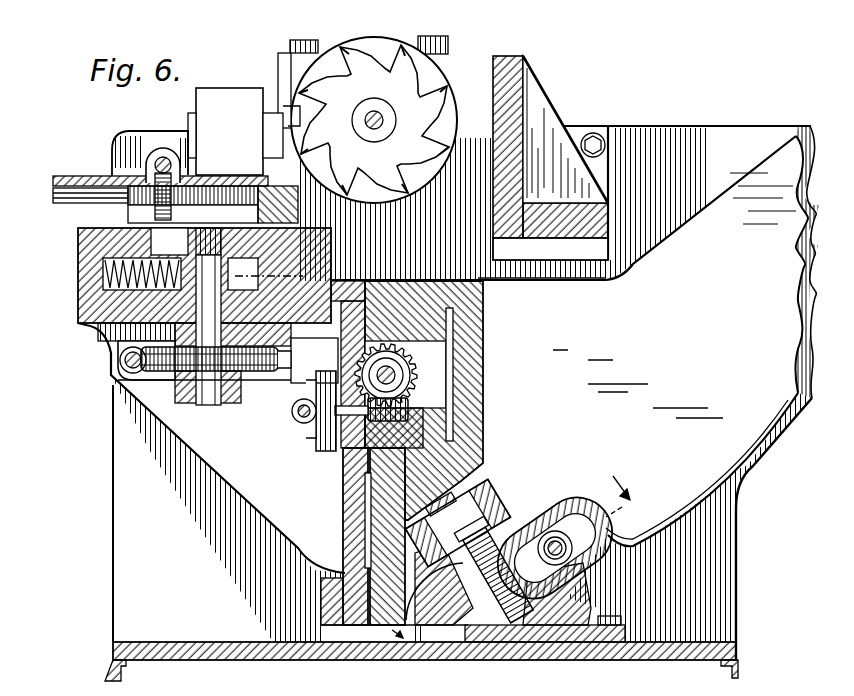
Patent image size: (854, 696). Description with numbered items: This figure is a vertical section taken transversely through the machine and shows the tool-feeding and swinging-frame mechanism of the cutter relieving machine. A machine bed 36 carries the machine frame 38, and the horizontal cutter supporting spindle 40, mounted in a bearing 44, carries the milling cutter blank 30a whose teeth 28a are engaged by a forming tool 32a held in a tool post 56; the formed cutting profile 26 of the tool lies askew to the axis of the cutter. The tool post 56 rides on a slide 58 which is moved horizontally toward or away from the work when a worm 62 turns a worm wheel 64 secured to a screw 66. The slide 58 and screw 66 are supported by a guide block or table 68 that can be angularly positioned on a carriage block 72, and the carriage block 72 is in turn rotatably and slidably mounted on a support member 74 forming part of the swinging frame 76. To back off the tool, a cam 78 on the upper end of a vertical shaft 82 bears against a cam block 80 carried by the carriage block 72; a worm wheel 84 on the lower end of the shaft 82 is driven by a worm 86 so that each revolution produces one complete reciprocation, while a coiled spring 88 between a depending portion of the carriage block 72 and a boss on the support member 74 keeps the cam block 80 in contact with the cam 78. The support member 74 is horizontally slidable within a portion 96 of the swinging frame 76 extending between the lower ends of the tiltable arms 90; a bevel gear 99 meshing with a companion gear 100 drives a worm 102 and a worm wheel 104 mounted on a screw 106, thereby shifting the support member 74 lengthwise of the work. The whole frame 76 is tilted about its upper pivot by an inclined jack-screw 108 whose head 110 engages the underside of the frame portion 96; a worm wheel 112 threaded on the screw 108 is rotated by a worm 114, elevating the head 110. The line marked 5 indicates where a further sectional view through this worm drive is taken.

The section line 5- 5 is at (516, 560).
The formed cutting profile or edge 26 is at (362, 118).
The teeth 28a is at (390, 178).
The milling cutter blank 30a is at (428, 82).
The forming tool 32a is at (283, 92).
The machine bed 36 is at (105, 652).
The machine frame 38 is at (125, 549).
The work or cutter supporting spindle 40 is at (400, 160).
The bearing 44 is at (440, 108).
The tool post 56 is at (204, 92).
The slide 58 is at (62, 168).
The worm 62 is at (155, 148).
The worm wheel 64 is at (165, 210).
The screw 66 is at (108, 200).
The guide block or table 68 is at (105, 226).
The carriage block 72 is at (85, 262).
The support member 74 is at (77, 318).
The swinging frame 76 is at (662, 234).
The cam 78 is at (195, 236).
The cam block 80 is at (320, 232).
The vertical shaft 82 is at (201, 387).
The worm wheel 84 is at (258, 362).
The worm 86 is at (123, 362).
The coiled spring 88 is at (97, 258).
The swinging or tiltable arms 90 is at (760, 164).
The portion of the swinging frame 96 is at (497, 304).
The bevel gear 99 is at (293, 417).
The companion gear 100 is at (317, 445).
The worm 102 is at (402, 398).
The worm wheel 104 is at (410, 362).
The screw 106 is at (385, 362).
The jack-screw 108 is at (512, 612).
The head 110 is at (455, 484).
The worm wheel 112 is at (472, 612).
The worm 114 is at (553, 528).